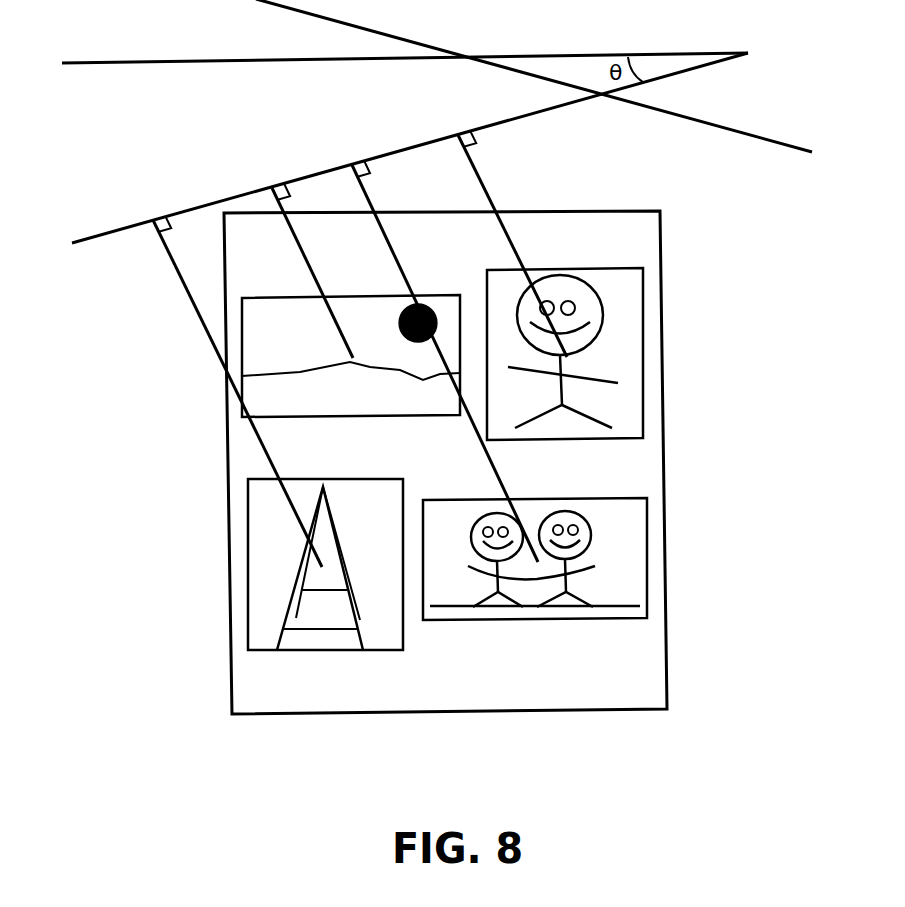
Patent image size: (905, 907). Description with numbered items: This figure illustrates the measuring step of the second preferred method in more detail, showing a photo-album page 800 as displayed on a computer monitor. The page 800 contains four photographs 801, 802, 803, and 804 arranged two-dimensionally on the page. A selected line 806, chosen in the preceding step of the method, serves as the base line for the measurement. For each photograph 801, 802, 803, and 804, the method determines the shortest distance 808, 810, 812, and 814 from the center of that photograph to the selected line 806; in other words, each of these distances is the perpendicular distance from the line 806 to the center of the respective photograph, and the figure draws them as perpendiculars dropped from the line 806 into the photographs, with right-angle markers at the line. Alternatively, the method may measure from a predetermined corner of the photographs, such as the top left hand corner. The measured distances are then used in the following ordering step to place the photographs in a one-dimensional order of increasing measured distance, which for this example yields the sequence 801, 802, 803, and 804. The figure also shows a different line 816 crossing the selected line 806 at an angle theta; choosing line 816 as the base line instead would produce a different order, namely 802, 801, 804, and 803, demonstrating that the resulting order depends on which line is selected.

The photo-album page 800 is at (661, 197).
The photograph 801 is at (351, 356).
The photograph 802 is at (565, 354).
The photograph 803 is at (325, 564).
The photograph 804 is at (535, 559).
The selected line 806 is at (76, 232).
The shortest distance 808 is at (165, 283).
The shortest distance 810 is at (272, 241).
The shortest distance 812 is at (362, 239).
The shortest distance 814 is at (498, 159).
The line 816 is at (747, 119).